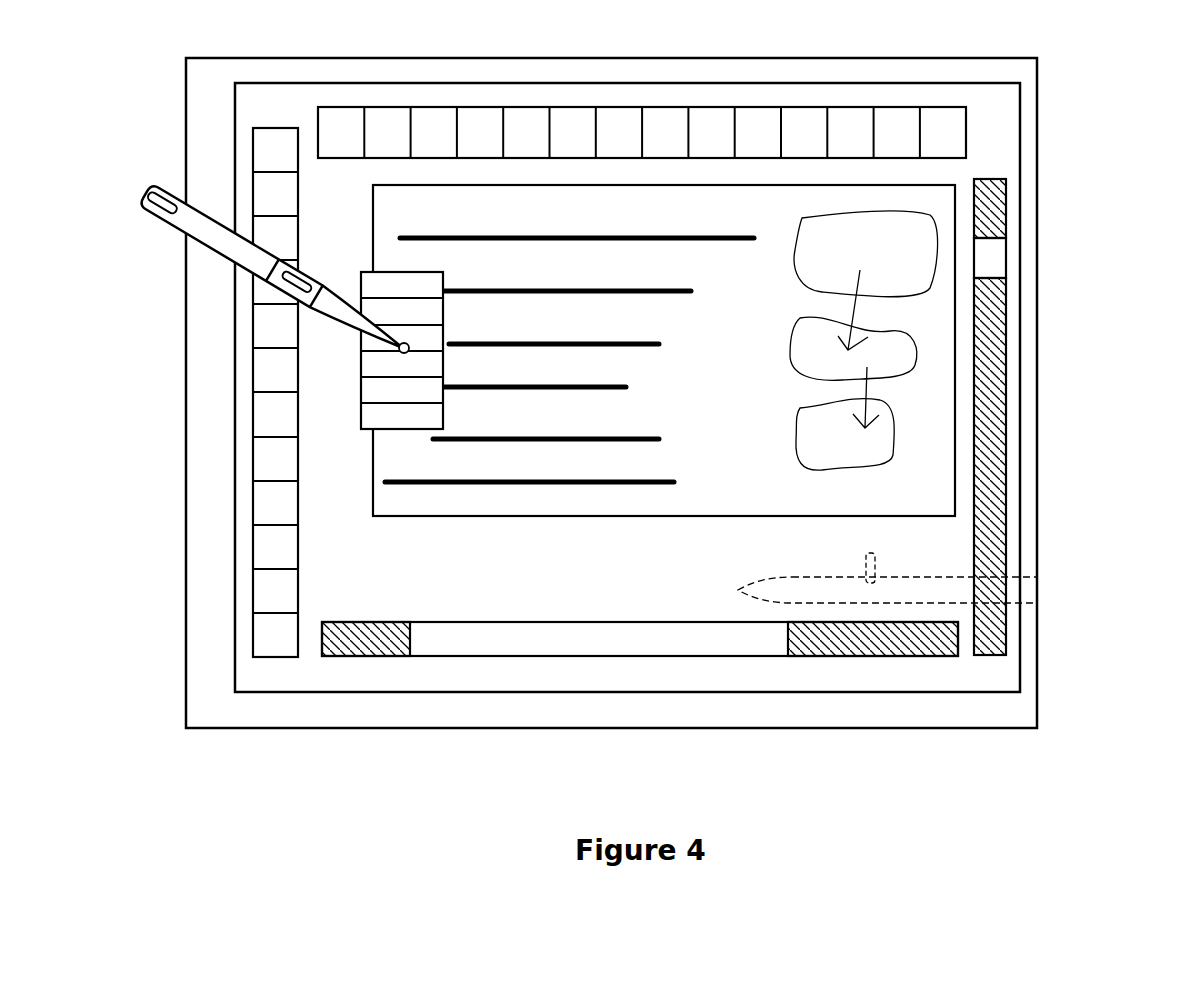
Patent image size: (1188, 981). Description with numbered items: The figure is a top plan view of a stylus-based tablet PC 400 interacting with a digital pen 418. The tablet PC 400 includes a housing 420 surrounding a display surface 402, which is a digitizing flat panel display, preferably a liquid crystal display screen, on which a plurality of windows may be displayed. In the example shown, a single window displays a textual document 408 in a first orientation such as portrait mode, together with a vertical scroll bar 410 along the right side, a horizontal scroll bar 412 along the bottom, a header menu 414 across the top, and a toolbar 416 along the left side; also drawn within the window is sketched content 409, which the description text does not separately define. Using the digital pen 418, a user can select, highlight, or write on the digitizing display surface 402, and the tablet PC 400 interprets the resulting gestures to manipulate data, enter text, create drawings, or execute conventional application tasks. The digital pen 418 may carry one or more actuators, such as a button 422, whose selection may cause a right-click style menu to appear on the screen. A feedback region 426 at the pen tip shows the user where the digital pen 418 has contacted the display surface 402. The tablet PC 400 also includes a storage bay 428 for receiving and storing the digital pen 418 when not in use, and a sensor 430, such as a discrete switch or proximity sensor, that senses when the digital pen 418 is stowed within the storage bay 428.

The tablet PC 400 is at (1084, 214).
The display surface 402 is at (908, 539).
The textual document 408 is at (596, 457).
The handwritten sketch / flowchart 409 is at (890, 367).
The vertical scroll bar 410 is at (992, 238).
The horizontal scroll bar 412 is at (705, 639).
The header menu 414 is at (622, 140).
The toolbar 416 is at (275, 568).
The digital pen 418 is at (195, 230).
The housing 420 is at (520, 67).
The button 422 is at (290, 292).
The feedback region 426 is at (403, 348).
The storage bay 428 is at (875, 562).
The sensor 430 is at (940, 605).